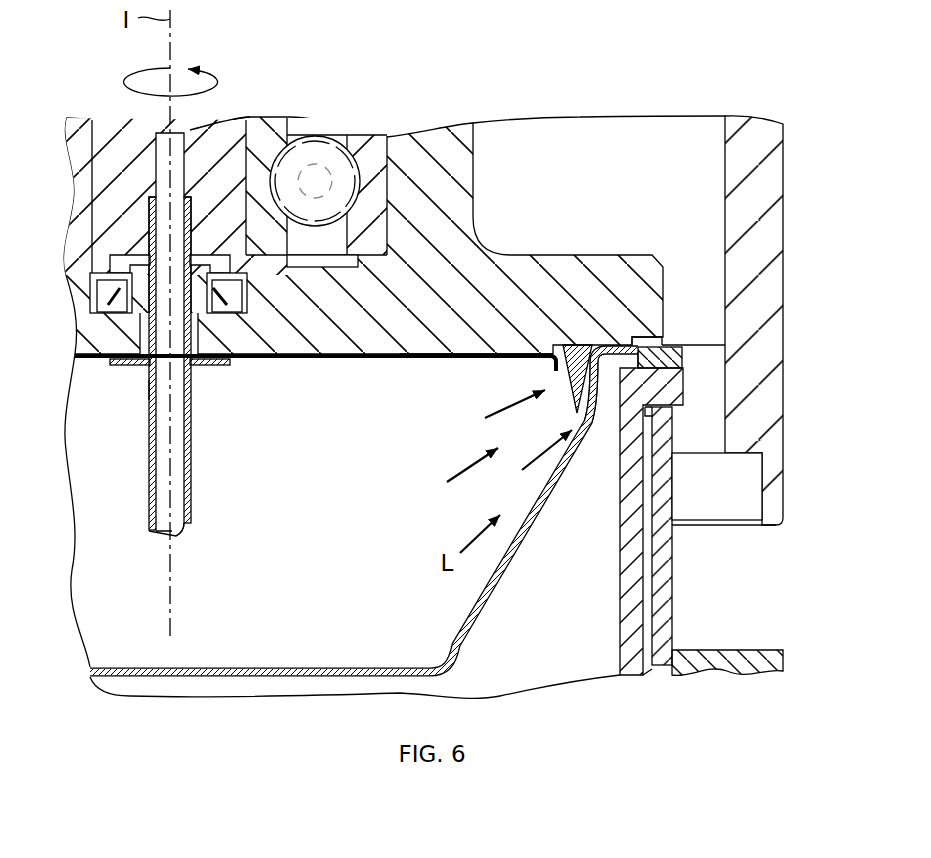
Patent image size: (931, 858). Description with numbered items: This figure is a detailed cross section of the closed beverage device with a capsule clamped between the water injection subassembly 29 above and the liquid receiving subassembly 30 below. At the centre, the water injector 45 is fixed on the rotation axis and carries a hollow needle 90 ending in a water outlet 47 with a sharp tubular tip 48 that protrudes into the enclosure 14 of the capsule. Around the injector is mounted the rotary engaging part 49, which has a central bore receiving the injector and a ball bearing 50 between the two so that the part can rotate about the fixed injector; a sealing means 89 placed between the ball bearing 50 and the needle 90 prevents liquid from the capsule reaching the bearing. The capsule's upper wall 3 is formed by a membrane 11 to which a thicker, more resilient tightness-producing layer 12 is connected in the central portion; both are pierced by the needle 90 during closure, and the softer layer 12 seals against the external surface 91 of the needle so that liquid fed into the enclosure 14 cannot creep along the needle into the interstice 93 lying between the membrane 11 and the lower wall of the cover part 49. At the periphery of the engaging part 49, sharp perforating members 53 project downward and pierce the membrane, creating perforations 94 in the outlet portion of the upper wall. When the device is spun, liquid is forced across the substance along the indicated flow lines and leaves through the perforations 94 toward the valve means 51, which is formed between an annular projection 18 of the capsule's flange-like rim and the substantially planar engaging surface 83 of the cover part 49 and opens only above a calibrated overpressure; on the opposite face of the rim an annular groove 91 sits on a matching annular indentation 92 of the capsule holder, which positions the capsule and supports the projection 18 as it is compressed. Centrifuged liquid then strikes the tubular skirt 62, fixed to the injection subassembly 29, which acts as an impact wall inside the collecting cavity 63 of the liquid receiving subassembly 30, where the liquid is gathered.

The upper wall 3 is at (485, 354).
The membrane 11 is at (347, 359).
The tightness-producing layer 12 is at (112, 366).
The enclosure 14 is at (224, 660).
The projection 18 is at (650, 345).
The water injection subassembly 29 is at (763, 386).
The liquid receiving subassembly 30 is at (763, 633).
The water injector 45 is at (231, 118).
The water outlet 47 is at (178, 528).
The sharp tubular tip 48 is at (150, 534).
The rotary engaging part 49 is at (473, 165).
The ball bearing 50 is at (364, 139).
The valve means 51 is at (690, 327).
The perforating members 53 is at (575, 345).
The tubular portion of skirt 62 is at (776, 168).
The collecting cavity 63 is at (719, 499).
The engaging surface 83 is at (660, 334).
The sealing means 89 is at (90, 285).
The hollow needle 90 is at (193, 458).
The annular groove 91 is at (150, 393).
The annular indentation 92 is at (652, 371).
The interstice 93 is at (75, 357).
The perforations 94 is at (593, 380).